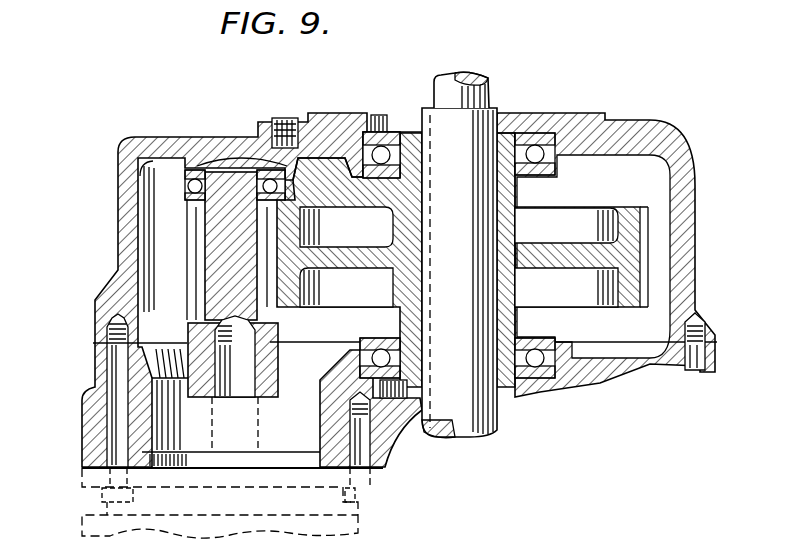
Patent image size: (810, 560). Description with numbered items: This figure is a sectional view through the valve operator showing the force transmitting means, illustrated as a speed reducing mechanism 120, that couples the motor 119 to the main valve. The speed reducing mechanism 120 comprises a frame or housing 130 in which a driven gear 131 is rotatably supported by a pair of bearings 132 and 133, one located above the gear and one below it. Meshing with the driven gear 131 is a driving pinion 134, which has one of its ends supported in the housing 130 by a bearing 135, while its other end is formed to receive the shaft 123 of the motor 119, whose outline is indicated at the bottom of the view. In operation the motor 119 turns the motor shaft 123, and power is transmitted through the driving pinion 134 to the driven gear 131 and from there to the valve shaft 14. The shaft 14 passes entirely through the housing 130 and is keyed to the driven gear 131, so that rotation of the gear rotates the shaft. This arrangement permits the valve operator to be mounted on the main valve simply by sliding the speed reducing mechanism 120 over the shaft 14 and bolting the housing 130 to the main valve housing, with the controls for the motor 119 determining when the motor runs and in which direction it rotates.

The shaft 14 is at (488, 92).
The motor 119 is at (82, 524).
The speed reducing mechanism 120 is at (112, 255).
The motor shaft 123 is at (238, 422).
The housing 130 is at (697, 182).
The driven gear 131 is at (364, 240).
The bearing 132 is at (381, 146).
The bearing 133 is at (535, 368).
The driving pinion 134 is at (206, 228).
The bearing 135 is at (196, 179).